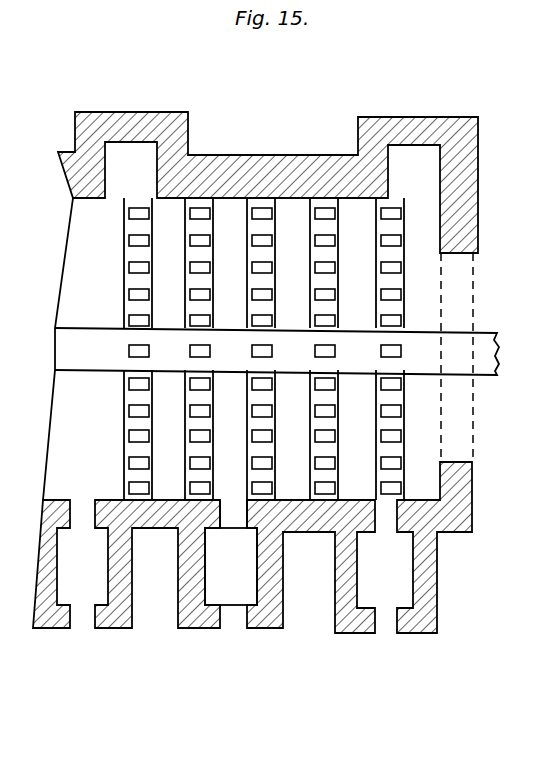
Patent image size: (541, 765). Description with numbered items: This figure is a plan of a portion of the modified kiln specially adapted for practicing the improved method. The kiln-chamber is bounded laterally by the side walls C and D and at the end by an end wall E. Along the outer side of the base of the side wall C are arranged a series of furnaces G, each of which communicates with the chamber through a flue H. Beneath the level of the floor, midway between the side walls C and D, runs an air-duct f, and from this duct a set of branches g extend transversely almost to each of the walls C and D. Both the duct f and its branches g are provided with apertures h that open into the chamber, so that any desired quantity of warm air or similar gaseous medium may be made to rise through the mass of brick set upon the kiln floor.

The side wall D is at (285, 140).
The air-duct f is at (498, 357).
The branches g is at (247, 384).
The apertures h is at (378, 470).
The side wall C is at (204, 566).
The end wall E is at (463, 482).
The furnace G is at (231, 566).
The flue H is at (233, 514).